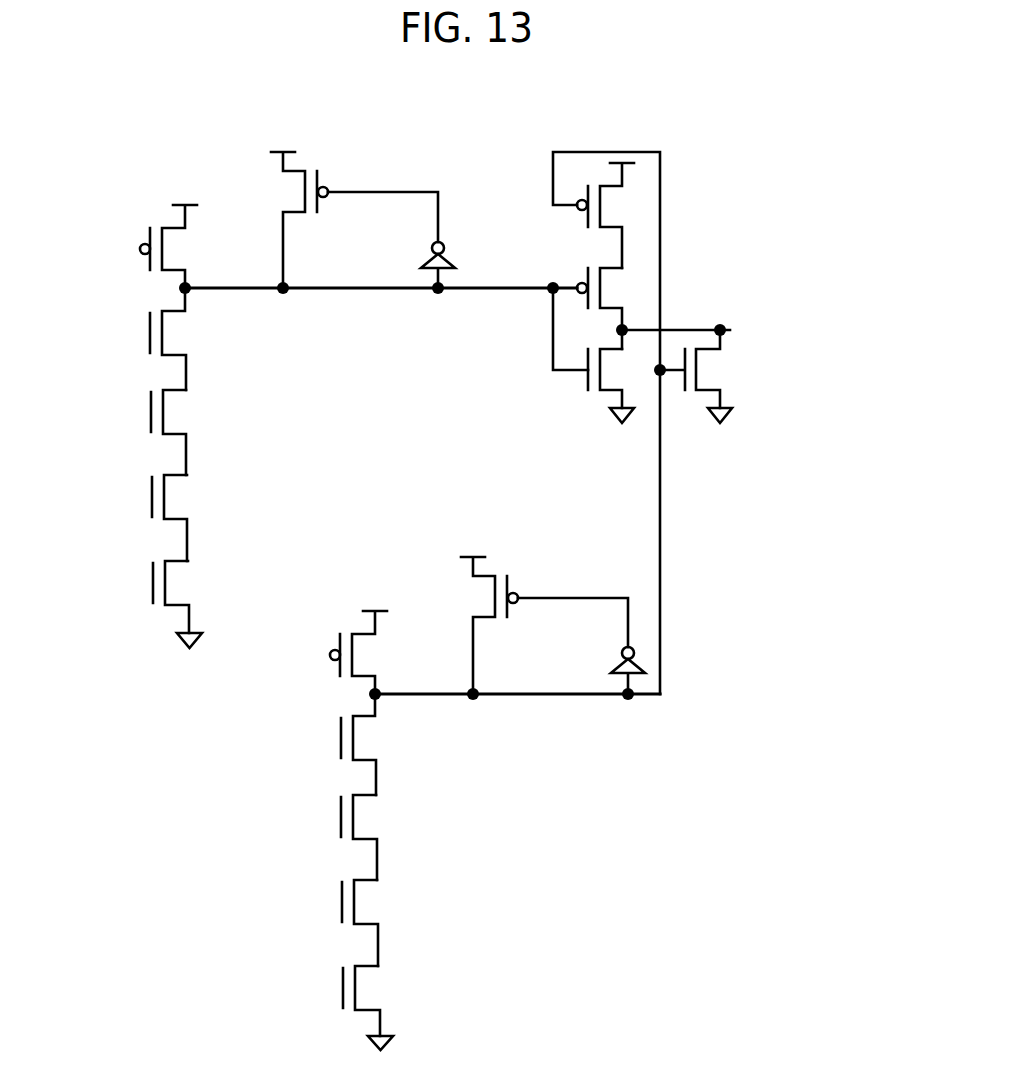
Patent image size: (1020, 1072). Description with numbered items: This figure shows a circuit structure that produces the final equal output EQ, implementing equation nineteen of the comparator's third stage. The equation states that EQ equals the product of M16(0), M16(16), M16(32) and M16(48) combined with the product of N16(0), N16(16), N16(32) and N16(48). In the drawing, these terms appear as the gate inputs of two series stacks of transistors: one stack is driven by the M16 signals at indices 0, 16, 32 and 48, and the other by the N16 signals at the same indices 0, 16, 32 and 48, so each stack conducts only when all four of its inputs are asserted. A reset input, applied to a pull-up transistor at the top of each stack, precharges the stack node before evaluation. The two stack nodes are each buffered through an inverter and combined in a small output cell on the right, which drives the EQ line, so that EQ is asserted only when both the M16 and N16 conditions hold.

The reset PMOS precharge transistors reset is at (330, 655).
The M16(0)/N16(0) NMOS transistors 0 is at (341, 738).
The M16(16)/N16(16) NMOS transistors 16 is at (341, 817).
The M16(32)/N16(32) NMOS transistors 32 is at (342, 902).
The M16(48)/N16(48) NMOS transistors 48 is at (343, 988).
The EQ output EQ is at (730, 330).